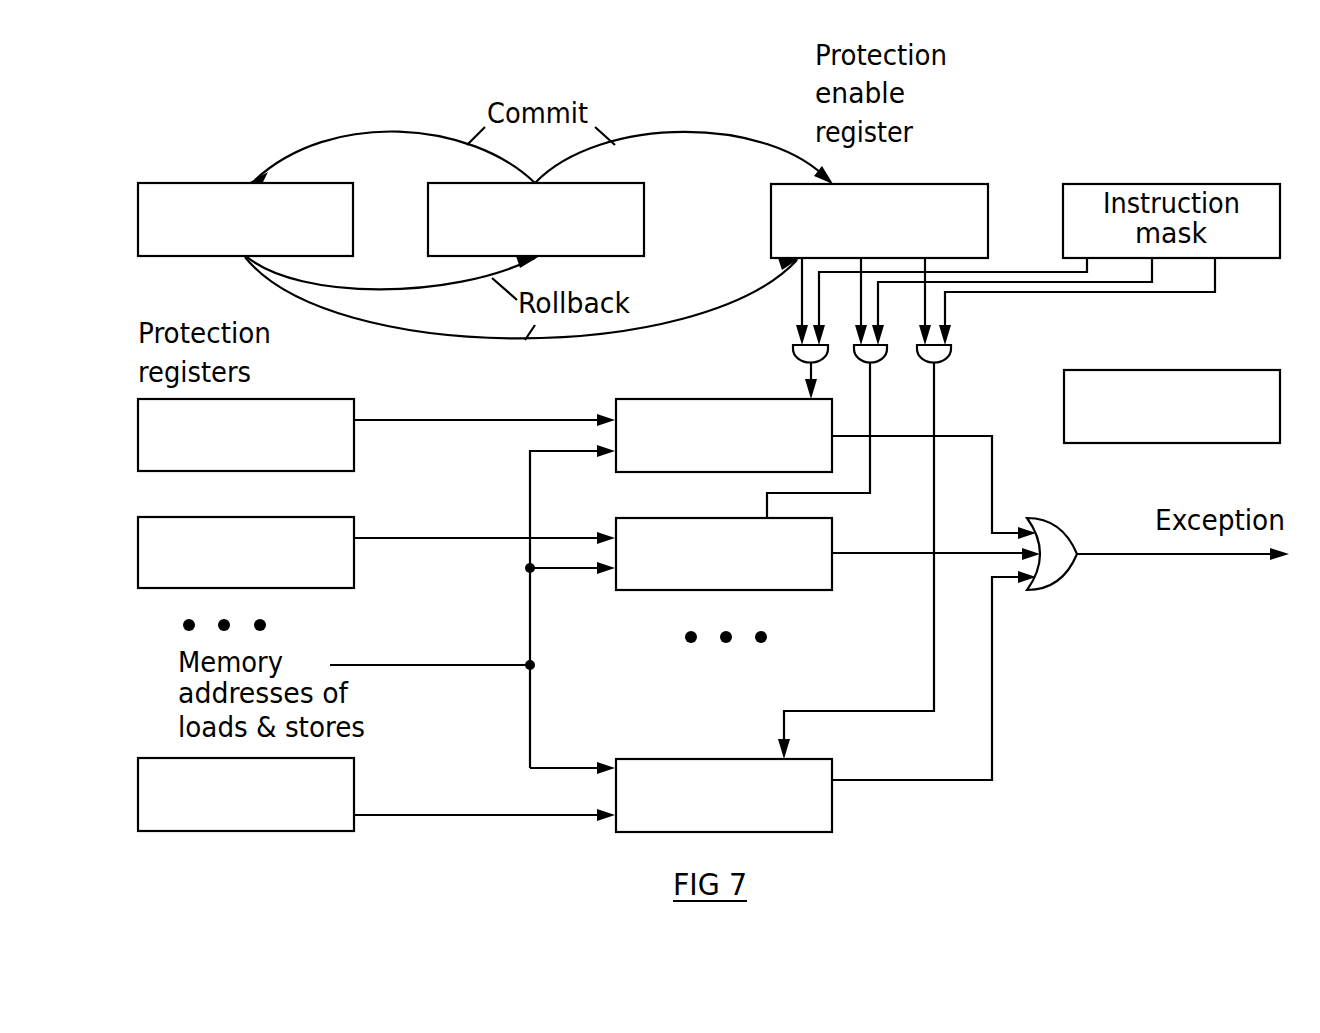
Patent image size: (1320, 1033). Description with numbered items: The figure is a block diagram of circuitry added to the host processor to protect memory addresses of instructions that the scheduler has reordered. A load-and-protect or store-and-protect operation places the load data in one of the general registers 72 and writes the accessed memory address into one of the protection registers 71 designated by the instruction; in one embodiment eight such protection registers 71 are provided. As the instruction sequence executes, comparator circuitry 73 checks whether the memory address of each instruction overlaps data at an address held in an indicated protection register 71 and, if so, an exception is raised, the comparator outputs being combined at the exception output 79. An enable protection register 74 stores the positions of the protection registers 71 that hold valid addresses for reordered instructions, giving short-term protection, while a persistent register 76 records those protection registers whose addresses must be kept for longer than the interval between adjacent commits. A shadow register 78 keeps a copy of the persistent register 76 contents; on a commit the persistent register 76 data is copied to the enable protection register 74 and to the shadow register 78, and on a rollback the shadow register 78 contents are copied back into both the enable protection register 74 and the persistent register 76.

The protection registers 71 is at (246, 615).
The general registers 72 is at (1172, 406).
The comparator circuitry 73 is at (724, 615).
The enable protection register 74 is at (879, 221).
The persistent register 76 is at (536, 219).
The shadow register 78 is at (245, 219).
The OR gate 79 is at (1050, 581).